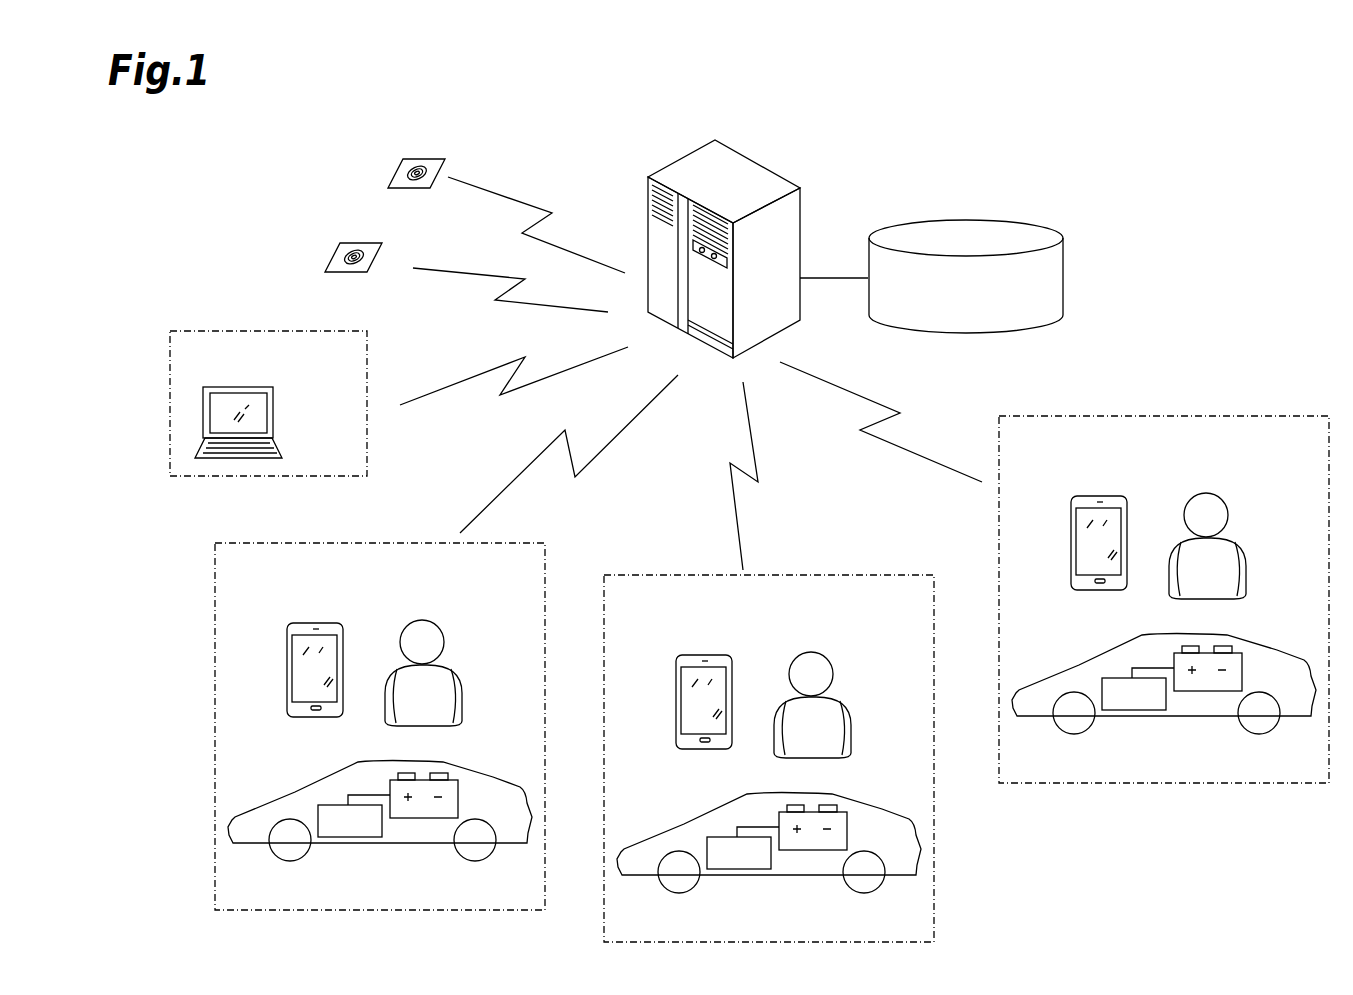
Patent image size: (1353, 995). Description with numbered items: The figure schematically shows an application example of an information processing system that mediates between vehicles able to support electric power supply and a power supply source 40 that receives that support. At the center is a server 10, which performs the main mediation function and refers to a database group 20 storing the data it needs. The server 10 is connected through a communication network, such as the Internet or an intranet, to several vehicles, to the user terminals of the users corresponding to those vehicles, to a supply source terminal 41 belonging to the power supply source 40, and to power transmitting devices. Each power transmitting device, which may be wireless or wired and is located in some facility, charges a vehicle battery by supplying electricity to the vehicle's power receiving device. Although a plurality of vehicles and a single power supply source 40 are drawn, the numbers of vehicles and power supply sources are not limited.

The server 10 is at (677, 158).
The database group 20 is at (1022, 222).
The power supply source 40 is at (268, 372).
The supply source terminal 41 is at (273, 407).